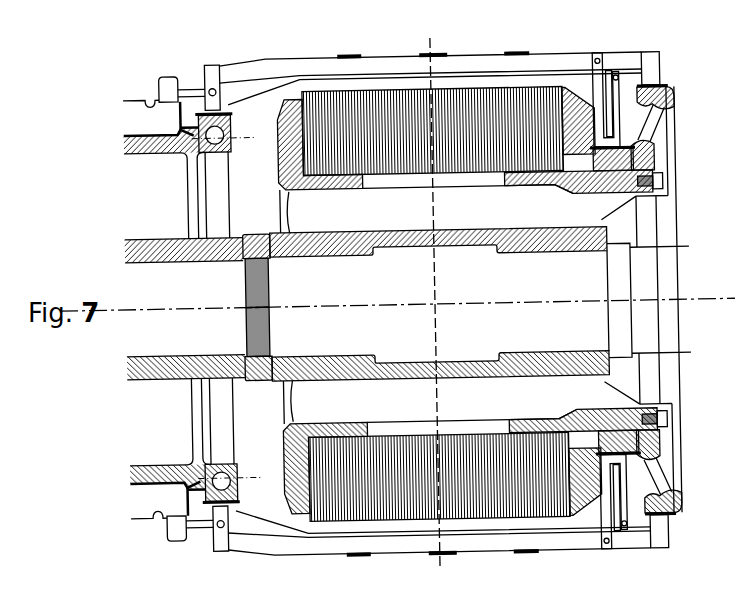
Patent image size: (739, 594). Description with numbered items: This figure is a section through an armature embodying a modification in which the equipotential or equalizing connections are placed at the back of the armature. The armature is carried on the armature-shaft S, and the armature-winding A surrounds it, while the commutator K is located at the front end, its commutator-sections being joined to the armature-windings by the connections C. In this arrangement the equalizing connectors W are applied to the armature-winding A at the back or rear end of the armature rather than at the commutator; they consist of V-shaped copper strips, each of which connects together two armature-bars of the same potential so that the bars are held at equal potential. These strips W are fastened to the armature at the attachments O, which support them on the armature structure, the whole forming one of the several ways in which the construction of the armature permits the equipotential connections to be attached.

The armature-winding A is at (269, 65).
The connections from the commutator-sections to the armature-windings C is at (194, 80).
The commutator K is at (183, 308).
The equalizing connections W is at (619, 133).
The insulated attachment O is at (633, 169).
The armature-shaft S is at (408, 304).